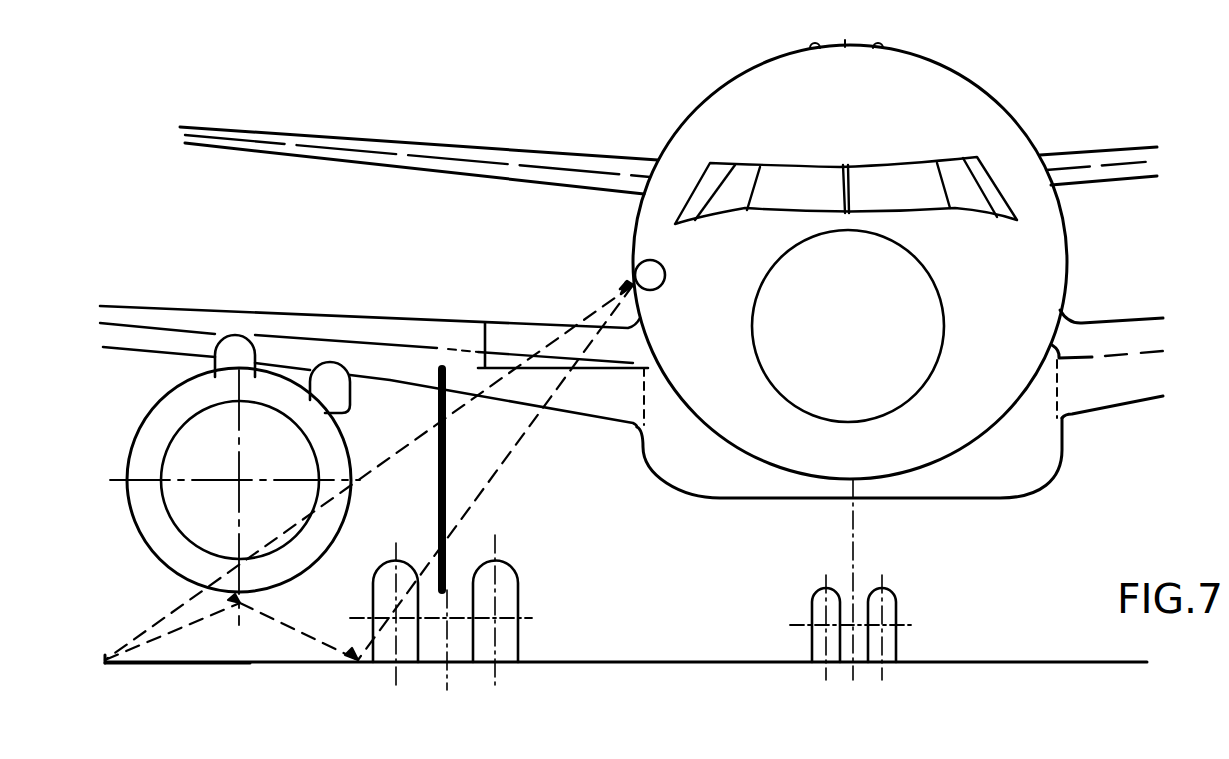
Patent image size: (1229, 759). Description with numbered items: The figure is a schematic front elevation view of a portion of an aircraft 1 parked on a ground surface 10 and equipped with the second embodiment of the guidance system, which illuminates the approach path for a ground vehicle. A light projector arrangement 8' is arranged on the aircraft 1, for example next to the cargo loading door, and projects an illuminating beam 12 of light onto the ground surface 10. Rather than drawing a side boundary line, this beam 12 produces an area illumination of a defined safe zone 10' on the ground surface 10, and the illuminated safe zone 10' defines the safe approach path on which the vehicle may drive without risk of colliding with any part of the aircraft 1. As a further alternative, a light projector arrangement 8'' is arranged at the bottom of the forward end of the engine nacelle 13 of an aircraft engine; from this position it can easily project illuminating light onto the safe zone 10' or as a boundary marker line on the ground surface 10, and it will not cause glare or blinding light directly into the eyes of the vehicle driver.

The aircraft 1 is at (945, 425).
The light projector arrangement 8' is at (385, 444).
The light projector arrangement 8'' is at (231, 623).
The ground surface 10 is at (626, 630).
The safe zone 10' is at (213, 694).
The illuminating beam 12 is at (490, 470).
The engine nacelle 13 is at (148, 557).